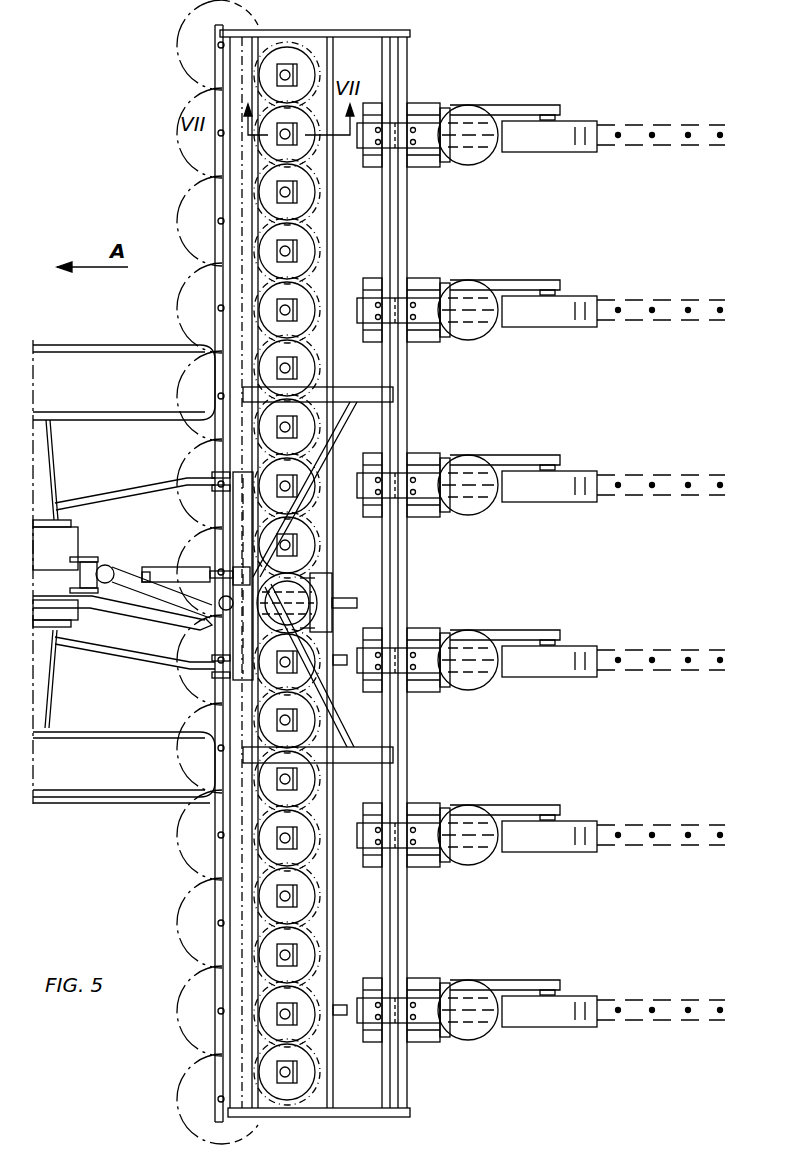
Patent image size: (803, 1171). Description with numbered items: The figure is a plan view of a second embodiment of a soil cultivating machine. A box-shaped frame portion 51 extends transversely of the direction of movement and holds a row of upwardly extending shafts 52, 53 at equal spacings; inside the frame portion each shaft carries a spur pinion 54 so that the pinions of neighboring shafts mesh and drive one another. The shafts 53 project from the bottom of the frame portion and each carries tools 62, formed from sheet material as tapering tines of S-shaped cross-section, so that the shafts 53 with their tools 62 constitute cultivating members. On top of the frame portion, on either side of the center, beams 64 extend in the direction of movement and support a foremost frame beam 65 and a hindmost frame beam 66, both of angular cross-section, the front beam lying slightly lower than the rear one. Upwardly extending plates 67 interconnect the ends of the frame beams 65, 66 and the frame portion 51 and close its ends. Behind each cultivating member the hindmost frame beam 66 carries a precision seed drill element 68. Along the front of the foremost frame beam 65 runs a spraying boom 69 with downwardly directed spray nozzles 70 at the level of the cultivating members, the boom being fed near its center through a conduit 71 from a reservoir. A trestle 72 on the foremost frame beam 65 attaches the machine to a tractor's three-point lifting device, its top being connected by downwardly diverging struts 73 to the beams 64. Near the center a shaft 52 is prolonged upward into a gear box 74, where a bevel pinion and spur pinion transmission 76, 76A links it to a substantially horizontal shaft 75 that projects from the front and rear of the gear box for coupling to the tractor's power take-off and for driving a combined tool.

The box-shaped frame portion 51 is at (302, 205).
The shaft 52 is at (299, 243).
The shaft 53 is at (303, 260).
The spur pinion 54 is at (318, 182).
The tool 62 is at (340, 665).
The beam 64 is at (393, 396).
The foremost frame beam 65 is at (233, 858).
The hindmost frame beam 66 is at (405, 735).
The plate 67 is at (340, 32).
The precision seed drill element 68 is at (470, 165).
The spraying boom 69 is at (215, 940).
The spray nozzle 70 is at (196, 192).
The conduit 71 is at (128, 612).
The trestle 72 is at (210, 512).
The strut 73 is at (338, 423).
The gear box 74 is at (325, 582).
The horizontal shaft 75 is at (357, 600).
The bevel pinion transmission 76 is at (300, 552).
The bevel pinion transmission 76A is at (330, 624).